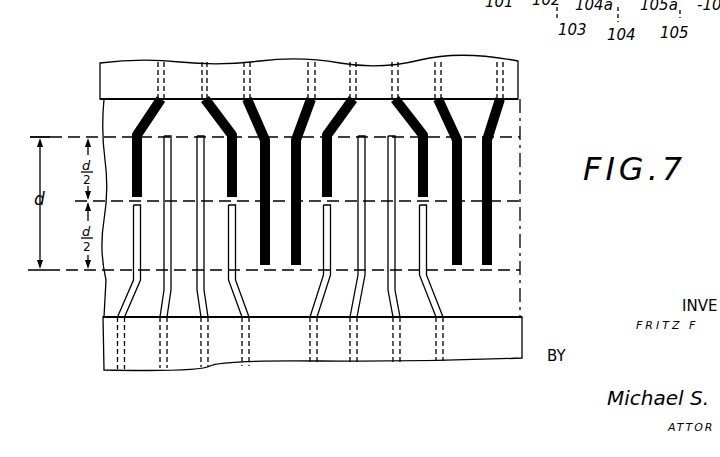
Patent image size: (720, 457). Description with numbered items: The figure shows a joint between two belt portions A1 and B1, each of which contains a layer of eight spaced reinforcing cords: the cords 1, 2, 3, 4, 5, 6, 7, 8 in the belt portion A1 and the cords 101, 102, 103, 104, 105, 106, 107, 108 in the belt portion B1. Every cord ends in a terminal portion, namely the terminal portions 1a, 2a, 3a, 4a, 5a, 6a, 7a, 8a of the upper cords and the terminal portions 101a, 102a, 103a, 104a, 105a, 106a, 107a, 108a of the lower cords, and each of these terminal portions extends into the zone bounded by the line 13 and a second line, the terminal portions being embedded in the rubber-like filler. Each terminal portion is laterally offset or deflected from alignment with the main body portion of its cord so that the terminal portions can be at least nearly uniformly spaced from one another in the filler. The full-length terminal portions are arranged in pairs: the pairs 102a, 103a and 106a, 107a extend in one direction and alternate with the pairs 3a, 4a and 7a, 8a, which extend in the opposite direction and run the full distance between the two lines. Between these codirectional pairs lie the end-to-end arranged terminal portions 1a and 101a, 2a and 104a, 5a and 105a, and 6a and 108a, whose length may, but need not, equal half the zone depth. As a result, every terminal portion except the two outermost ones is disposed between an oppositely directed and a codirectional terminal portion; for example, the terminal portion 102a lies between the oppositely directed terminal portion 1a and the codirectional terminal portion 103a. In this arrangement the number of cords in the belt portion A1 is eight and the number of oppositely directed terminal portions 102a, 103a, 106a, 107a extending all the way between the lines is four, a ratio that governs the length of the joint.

The reinforcing cord 1 is at (162, 62).
The reinforcing cord 2 is at (205, 62).
The reinforcing cord 3 is at (250, 62).
The reinforcing cord 4 is at (311, 62).
The reinforcing cord 5 is at (354, 62).
The reinforcing cord 6 is at (396, 61).
The reinforcing cord 7 is at (439, 62).
The reinforcing cord 8 is at (500, 62).
The terminal portion 1a is at (129, 136).
The terminal portion 2a is at (226, 138).
The terminal portion 3a is at (257, 145).
The terminal portion 4a is at (291, 144).
The terminal portion 5a is at (323, 145).
The terminal portion 6a is at (418, 114).
The terminal portion 7a is at (461, 150).
The terminal portion 8a is at (491, 158).
The line 13 is at (58, 137).
The reinforcing cord 101 is at (120, 370).
The reinforcing cord 102 is at (163, 369).
The reinforcing cord 103 is at (205, 368).
The reinforcing cord 104 is at (246, 367).
The reinforcing cord 105 is at (313, 365).
The reinforcing cord 106 is at (355, 364).
The reinforcing cord 107 is at (397, 363).
The reinforcing cord 108 is at (440, 361).
The terminal portion 101a is at (122, 303).
The terminal portion 102a is at (162, 293).
The terminal portion 103a is at (202, 300).
The terminal portion 104a is at (238, 281).
The terminal portion 105a is at (321, 284).
The terminal portion 106a is at (352, 300).
The terminal portion 107a is at (396, 282).
The terminal portion 108a is at (442, 299).
The belt portion A1 is at (538, 75).
The belt portion B1 is at (86, 356).